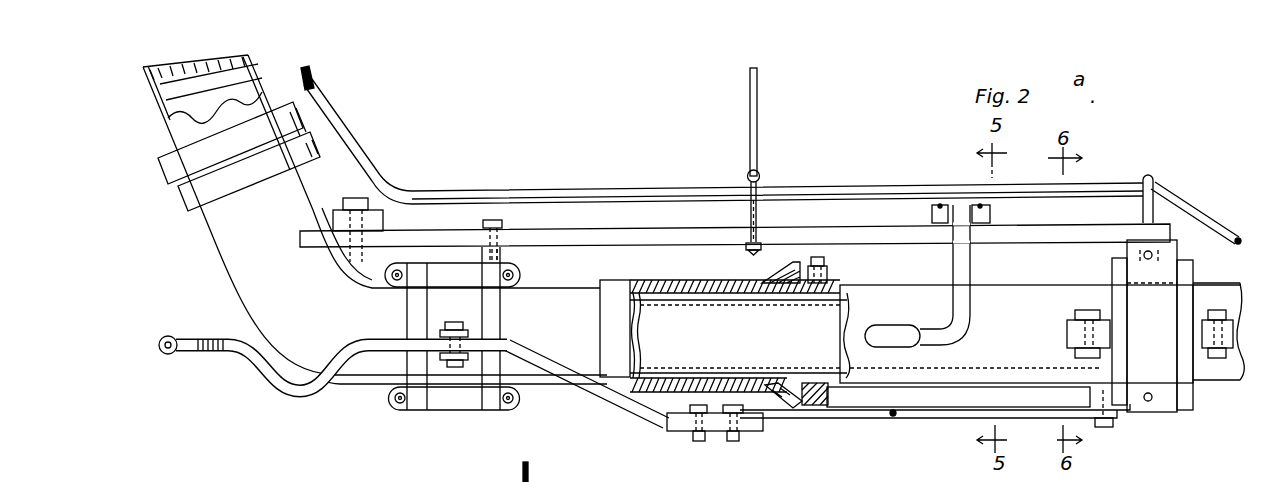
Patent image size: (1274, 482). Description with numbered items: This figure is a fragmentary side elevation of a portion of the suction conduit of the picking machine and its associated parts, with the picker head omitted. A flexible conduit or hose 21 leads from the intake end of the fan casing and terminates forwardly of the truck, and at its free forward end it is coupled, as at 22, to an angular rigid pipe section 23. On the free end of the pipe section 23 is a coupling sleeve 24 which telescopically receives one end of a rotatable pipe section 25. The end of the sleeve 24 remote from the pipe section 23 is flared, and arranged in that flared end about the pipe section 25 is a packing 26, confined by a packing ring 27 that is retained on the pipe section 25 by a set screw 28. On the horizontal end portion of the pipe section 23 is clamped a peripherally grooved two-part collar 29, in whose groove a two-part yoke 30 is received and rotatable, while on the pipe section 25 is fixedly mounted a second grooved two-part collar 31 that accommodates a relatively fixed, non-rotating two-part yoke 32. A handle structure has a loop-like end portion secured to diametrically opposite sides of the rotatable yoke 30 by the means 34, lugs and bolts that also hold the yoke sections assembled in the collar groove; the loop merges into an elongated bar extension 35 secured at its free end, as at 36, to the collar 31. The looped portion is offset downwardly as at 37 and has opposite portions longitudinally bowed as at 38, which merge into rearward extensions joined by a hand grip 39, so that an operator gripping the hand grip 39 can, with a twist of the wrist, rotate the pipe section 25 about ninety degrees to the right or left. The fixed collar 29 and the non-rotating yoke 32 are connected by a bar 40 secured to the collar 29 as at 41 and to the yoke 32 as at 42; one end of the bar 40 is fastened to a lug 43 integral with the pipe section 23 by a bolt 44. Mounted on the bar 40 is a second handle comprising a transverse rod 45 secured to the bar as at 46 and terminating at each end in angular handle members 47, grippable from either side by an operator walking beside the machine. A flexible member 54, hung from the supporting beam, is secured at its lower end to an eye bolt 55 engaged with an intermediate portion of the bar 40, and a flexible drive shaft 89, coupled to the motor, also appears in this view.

The flexible conduit or hose 21 is at (160, 102).
The coupling 22 is at (177, 167).
The angular rigid pipe section 23 is at (363, 375).
The coupling sleeve 24 is at (673, 262).
The rotatable pipe section 25 is at (892, 297).
The packing 26 is at (787, 408).
The packing ring 27 is at (821, 407).
The set screw 28 is at (812, 262).
The two-part collar 29 is at (420, 403).
The two-part yoke 30 is at (463, 403).
The two-part collar 31 is at (1193, 409).
The two-part yoke 32 is at (1163, 293).
The securing means 34 is at (457, 322).
The bar extension 35 is at (899, 418).
The securing point 36 is at (1118, 434).
The downward offset 37 is at (592, 380).
The bowed portions 38 is at (257, 375).
The hand grip 39 is at (168, 357).
The bar 40 is at (597, 237).
The securing point 41 is at (498, 220).
The securing point 42 is at (1127, 259).
The lug 43 is at (326, 208).
The bolt 44 is at (362, 207).
The transverse rod 45 is at (978, 214).
The securing point 46 is at (940, 205).
The angular handle members 47 is at (950, 348).
The flexible member 54 is at (748, 88).
The eye bolt 55 is at (760, 170).
The flexible drive shaft 89 is at (498, 197).